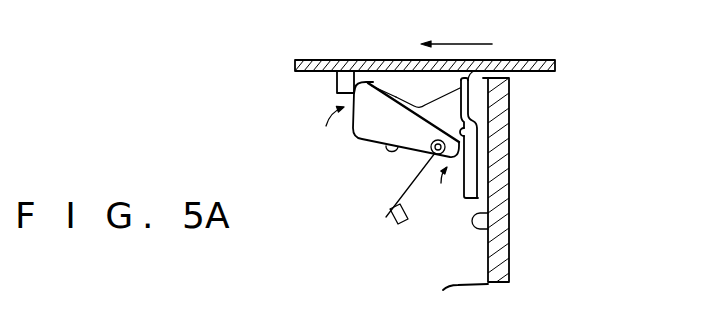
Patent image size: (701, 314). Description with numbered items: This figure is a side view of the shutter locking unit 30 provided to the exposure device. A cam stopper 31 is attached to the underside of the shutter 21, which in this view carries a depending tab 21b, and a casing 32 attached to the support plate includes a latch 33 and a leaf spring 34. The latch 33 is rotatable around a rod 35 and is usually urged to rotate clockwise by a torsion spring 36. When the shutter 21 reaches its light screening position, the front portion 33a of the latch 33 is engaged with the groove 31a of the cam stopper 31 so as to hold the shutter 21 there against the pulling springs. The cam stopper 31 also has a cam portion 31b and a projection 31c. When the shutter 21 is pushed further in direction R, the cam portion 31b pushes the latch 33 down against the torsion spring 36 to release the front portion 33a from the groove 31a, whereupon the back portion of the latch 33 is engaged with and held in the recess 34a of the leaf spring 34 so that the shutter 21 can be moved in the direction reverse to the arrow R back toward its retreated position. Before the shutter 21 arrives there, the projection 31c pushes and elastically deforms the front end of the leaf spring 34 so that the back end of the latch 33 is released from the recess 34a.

The shutter 21 is at (538, 60).
The tab of cover plate 21b is at (296, 61).
The shutter locking unit 30 is at (519, 105).
The cam stopper 31 is at (401, 93).
The groove of cam stopper 31a is at (372, 84).
The cam portion of cam stopper 31b is at (421, 100).
The projection of cam stopper 31c is at (336, 92).
The casing 32 is at (510, 258).
The latch 33 is at (357, 132).
The front portion of latch 33a is at (350, 94).
The leaf spring 34 is at (470, 180).
The recess of leaf spring 34a is at (468, 126).
The rod 35 is at (419, 168).
The torsion spring 36 is at (426, 182).
The direction R is at (458, 44).